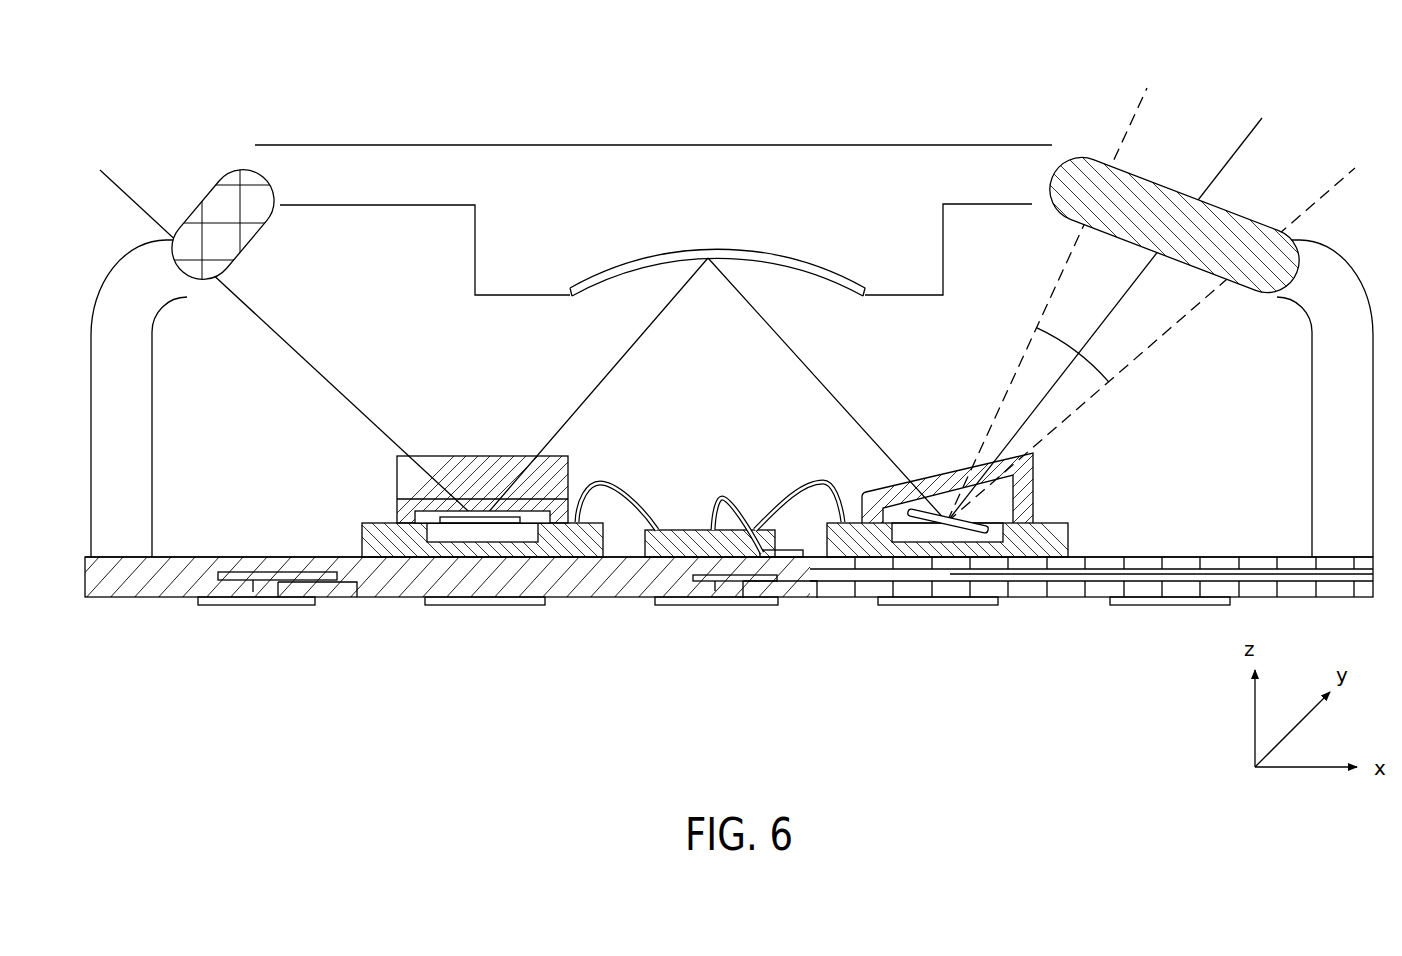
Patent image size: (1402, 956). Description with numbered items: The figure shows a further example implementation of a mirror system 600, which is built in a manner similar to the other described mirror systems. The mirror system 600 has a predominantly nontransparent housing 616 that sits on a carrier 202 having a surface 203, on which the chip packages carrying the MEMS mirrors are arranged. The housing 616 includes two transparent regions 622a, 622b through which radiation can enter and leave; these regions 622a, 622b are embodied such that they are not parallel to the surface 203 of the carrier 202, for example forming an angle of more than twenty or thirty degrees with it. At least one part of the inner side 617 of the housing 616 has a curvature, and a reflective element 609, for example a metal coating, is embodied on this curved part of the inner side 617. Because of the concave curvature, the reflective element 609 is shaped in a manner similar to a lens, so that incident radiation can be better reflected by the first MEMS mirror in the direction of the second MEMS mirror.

The mirror system 600 is at (731, 342).
The housing 616 is at (386, 145).
The transparent region 622a is at (220, 168).
The transparent region 622b is at (1176, 190).
The inner side 617 is at (571, 296).
The reflective element 609 is at (831, 295).
The surface 203 is at (205, 557).
The carrier 202 is at (130, 590).